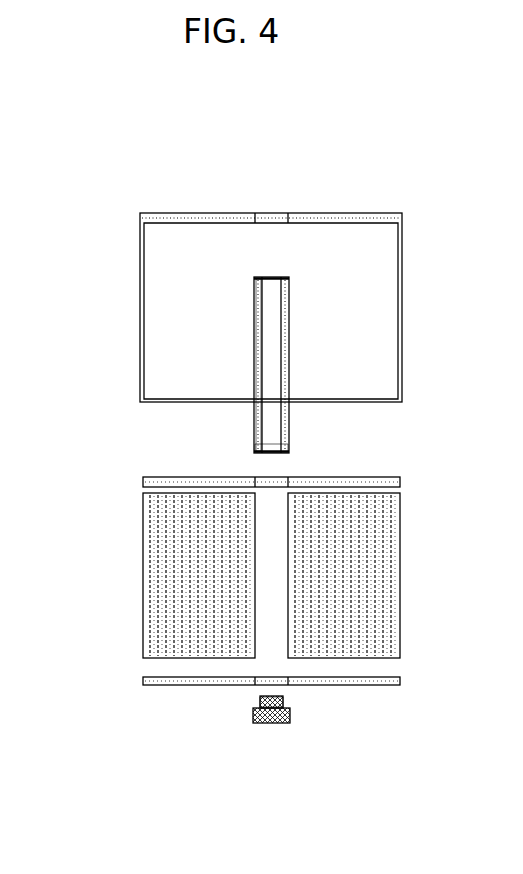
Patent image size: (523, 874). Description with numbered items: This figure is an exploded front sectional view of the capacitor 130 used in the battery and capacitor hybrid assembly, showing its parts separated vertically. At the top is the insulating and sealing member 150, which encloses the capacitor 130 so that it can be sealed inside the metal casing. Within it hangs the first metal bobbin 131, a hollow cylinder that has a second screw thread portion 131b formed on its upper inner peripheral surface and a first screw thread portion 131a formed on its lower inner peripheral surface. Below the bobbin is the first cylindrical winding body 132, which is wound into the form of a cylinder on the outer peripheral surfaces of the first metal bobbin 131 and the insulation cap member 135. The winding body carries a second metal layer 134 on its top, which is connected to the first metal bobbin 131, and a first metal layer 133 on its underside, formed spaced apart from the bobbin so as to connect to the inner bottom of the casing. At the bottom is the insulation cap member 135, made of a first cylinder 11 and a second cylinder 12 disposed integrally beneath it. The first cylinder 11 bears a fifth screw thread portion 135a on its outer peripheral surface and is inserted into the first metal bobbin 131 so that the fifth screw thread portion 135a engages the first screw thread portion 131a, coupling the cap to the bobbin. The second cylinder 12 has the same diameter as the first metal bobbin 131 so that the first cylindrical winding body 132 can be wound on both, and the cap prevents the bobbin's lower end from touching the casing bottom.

The insulating and sealing member 150 is at (170, 222).
The first metal bobbin 131 is at (254, 322).
The second screw thread portion 131b is at (266, 291).
The first screw thread portion 131a is at (266, 446).
The capacitor 130 is at (143, 559).
The second metal layer 134 is at (186, 482).
The first cylindrical winding body 132 is at (150, 598).
The first metal layer 133 is at (195, 681).
The insulation cap member 135 is at (272, 709).
The fifth screw thread portion 135a is at (236, 697).
The first cylinder 11 is at (284, 699).
The second cylinder 12 is at (291, 716).